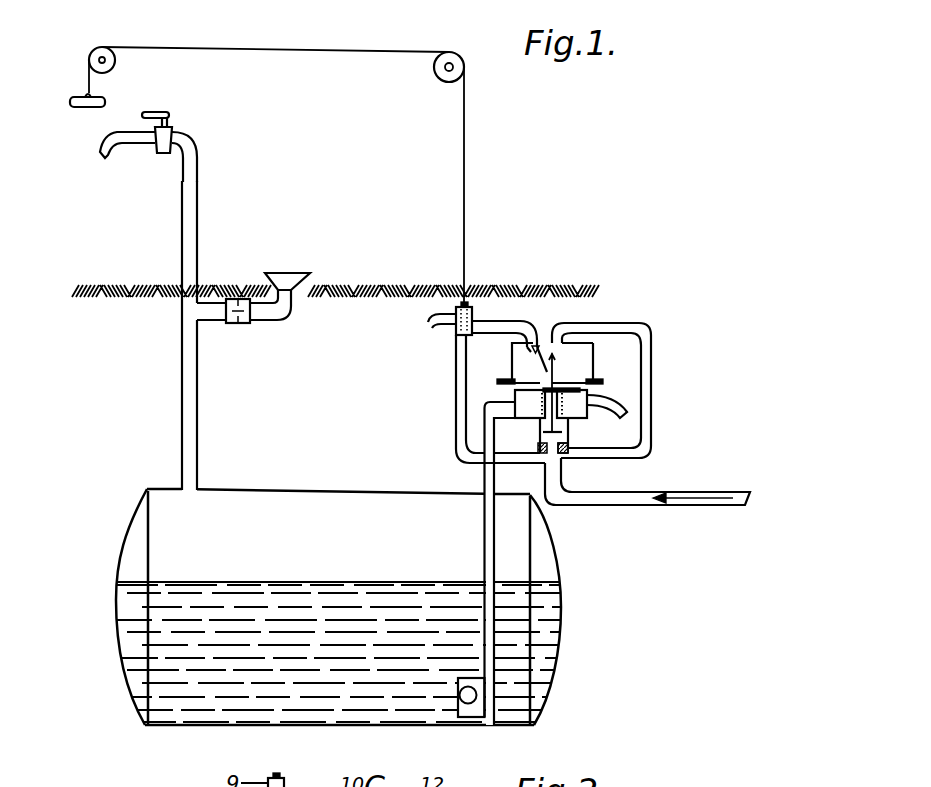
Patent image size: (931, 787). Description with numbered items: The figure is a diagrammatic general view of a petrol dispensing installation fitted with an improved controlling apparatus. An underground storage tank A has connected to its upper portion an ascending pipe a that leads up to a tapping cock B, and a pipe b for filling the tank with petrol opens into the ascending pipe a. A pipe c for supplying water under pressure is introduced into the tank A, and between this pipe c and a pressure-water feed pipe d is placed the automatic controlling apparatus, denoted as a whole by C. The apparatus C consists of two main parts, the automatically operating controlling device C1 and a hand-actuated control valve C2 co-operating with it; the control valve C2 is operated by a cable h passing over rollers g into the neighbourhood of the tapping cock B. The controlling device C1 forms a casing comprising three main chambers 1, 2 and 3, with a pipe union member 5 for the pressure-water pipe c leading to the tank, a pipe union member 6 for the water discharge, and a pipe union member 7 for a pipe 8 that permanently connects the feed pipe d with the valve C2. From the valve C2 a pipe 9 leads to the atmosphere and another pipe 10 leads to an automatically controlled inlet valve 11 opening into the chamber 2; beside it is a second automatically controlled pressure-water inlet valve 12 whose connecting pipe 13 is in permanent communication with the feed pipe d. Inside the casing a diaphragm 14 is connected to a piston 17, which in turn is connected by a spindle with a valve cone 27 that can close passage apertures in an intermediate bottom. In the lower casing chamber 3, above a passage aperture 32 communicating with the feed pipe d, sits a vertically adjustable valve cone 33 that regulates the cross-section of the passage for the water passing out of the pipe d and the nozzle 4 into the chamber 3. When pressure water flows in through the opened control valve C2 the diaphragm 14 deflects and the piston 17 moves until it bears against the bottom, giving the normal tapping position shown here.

The rollers g is at (101, 47).
The cable h is at (287, 44).
The tapping cock B is at (176, 140).
The ascending pipe a is at (184, 400).
The pipe b is at (277, 318).
The underground storage tank A is at (240, 500).
The pipe c is at (488, 482).
The pipe 9 is at (428, 318).
The control valve C2 is at (477, 396).
The pipe 8 is at (457, 397).
The pipe union member 7 is at (531, 459).
The pipe 10 is at (493, 324).
The automatic controlling apparatus C is at (562, 389).
The chamber 2 is at (516, 363).
The inlet valve 11 is at (512, 347).
The diaphragm 14 is at (580, 382).
The chamber 1 is at (528, 410).
The pipe union member 5 is at (513, 408).
The piston 17 is at (573, 402).
The pipe union member 6 is at (608, 412).
The valve cone 27 is at (559, 432).
The lower casing chamber 3 is at (534, 428).
The passage aperture 32 is at (551, 448).
The valve cone 33 is at (563, 448).
The controlling device C1 is at (621, 379).
The pressure-water inlet valve 12 is at (563, 342).
The connecting pipe 13 is at (652, 353).
The nozzle 4 is at (558, 473).
The pressure-water feed pipe d is at (667, 500).